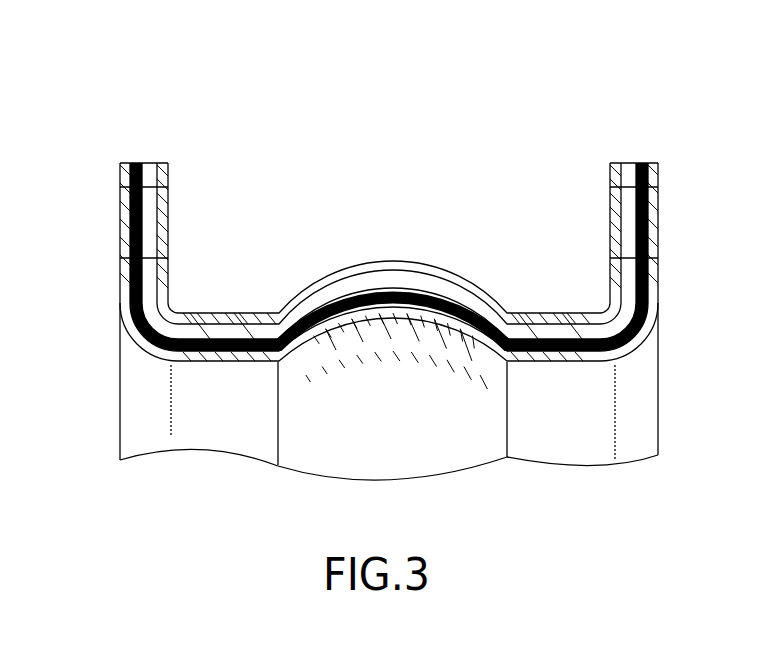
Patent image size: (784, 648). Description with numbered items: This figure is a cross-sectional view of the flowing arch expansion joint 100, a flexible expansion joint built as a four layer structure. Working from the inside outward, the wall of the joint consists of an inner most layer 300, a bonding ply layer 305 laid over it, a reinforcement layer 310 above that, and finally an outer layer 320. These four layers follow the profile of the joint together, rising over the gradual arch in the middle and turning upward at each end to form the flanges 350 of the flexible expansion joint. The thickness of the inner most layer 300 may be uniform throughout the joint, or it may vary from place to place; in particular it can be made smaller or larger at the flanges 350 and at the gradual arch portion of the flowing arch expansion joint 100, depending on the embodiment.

The flowing arch expansion joint 100 is at (378, 172).
The inner most layer 300 is at (655, 325).
The bonding ply layer 305 is at (125, 219).
The reinforcement layer 310 is at (627, 210).
The outer layer 320 is at (550, 313).
The flanges 350 is at (143, 163).